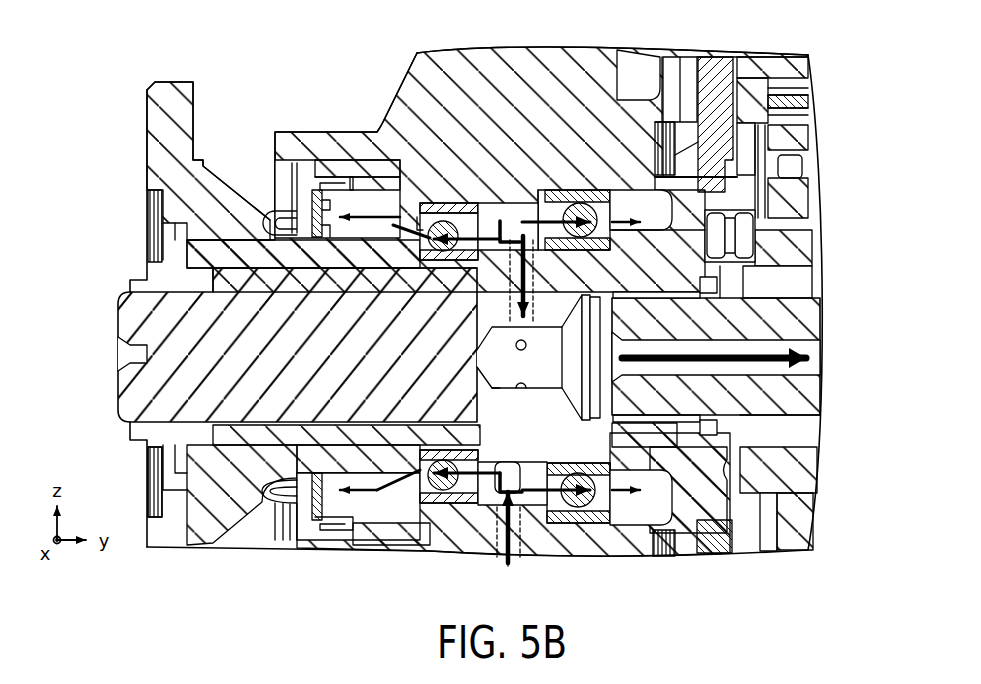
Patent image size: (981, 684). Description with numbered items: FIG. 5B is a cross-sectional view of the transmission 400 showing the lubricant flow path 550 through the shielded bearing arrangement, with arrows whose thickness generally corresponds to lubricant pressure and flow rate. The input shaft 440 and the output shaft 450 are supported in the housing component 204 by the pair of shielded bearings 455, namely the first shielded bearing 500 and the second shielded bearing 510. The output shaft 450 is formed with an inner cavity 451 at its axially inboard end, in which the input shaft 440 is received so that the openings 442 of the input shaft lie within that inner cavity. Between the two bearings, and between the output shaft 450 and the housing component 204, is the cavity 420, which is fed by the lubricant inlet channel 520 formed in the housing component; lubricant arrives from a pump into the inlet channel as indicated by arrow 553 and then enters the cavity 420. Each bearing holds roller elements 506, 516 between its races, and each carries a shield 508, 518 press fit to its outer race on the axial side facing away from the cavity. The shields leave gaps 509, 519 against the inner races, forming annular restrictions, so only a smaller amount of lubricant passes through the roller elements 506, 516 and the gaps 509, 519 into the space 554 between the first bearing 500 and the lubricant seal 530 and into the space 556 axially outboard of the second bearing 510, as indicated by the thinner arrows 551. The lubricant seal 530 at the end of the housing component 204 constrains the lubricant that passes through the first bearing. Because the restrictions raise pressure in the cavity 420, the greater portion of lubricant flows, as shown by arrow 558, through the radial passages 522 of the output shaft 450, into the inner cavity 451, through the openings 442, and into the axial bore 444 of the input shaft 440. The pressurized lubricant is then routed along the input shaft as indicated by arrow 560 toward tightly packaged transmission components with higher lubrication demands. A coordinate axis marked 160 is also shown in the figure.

The transmission 400 is at (100, 83).
The pair of shielded bearings 455 is at (493, 117).
The housing component 204 is at (570, 77).
The lubricant seal 530 is at (310, 187).
The space 554 is at (367, 203).
The arrows 551 is at (388, 222).
The roller elements 506 is at (456, 210).
The first shielded bearing 500 is at (462, 203).
The shield 508 is at (420, 228).
The shield 518 is at (600, 190).
The second shielded bearing 510 is at (565, 183).
The space 556 is at (650, 197).
The gap 519 is at (632, 238).
The cavity 420 is at (560, 268).
The radial passages 522 is at (545, 297).
The arrow 558 is at (510, 287).
The gap 509 is at (420, 285).
The openings 442 is at (515, 343).
The inner cavity 451 is at (502, 385).
The arrow 560 is at (707, 360).
The axial bore 444 is at (824, 341).
The input shaft 440 is at (803, 387).
The lubricant inlet channel 520 is at (512, 457).
The roller elements 516 is at (575, 505).
The arrow 553 is at (497, 520).
The lubricant flow path 550 is at (495, 567).
The output shaft 450 is at (133, 323).
The spline 160 is at (100, 508).